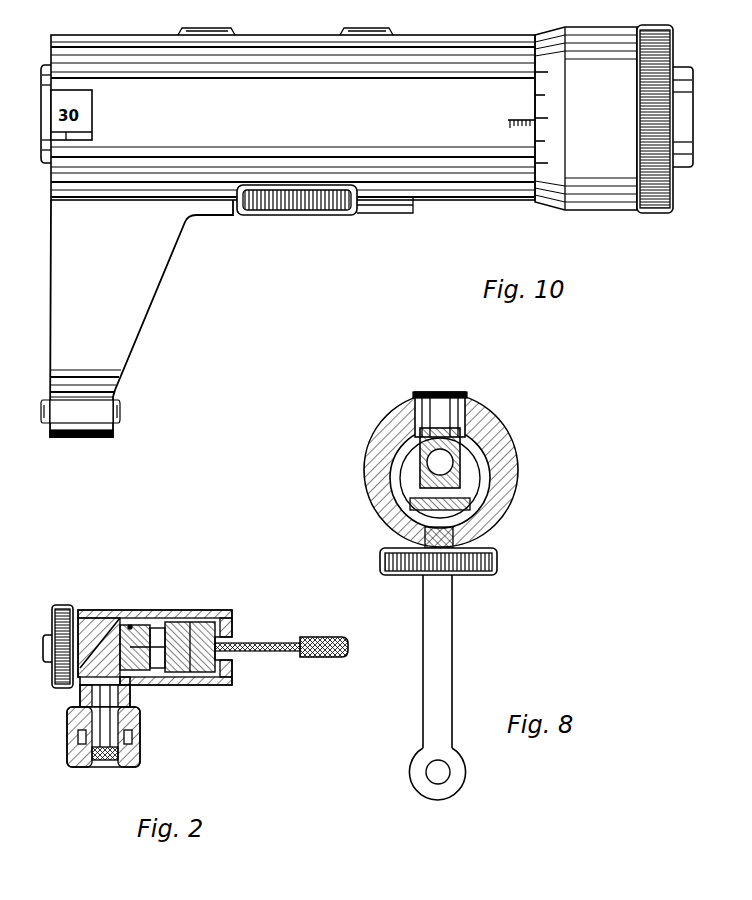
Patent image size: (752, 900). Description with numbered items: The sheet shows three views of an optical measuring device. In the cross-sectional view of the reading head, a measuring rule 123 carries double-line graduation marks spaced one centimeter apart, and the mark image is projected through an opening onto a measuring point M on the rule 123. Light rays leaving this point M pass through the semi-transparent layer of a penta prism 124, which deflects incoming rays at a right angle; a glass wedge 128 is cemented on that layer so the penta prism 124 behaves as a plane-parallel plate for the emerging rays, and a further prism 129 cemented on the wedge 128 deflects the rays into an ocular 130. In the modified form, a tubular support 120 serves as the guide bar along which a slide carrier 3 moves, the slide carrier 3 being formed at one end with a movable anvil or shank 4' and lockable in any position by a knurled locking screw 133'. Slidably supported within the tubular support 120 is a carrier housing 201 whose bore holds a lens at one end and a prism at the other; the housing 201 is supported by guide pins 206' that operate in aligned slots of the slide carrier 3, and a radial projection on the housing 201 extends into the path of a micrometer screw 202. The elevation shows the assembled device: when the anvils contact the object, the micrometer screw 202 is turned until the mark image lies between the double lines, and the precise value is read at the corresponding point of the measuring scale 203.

In FIG. 10, the measuring scale 203 is at (505, 142).
In FIG. 10, the micrometer screw 202 is at (638, 213).
In FIG. 8, the slide carrier 3 is at (487, 421).
In FIG. 8, the tubular support 120 is at (482, 460).
In FIG. 8, the guide pins 206' is at (467, 407).
In FIG. 8, the carrier housing 201 is at (451, 485).
In FIG. 8, the knurled locking screw 133' is at (470, 551).
In FIG. 8, the movable measuring anvil 4' is at (452, 687).
In FIG. 2, the measuring rule 123 is at (182, 618).
In FIG. 2, the prism 129 is at (98, 610).
In FIG. 2, the penta prism 124 is at (130, 626).
In FIG. 2, the measuring point M is at (187, 687).
In FIG. 2, the glass wedge 128 is at (145, 683).
In FIG. 2, the ocular 130 is at (97, 763).